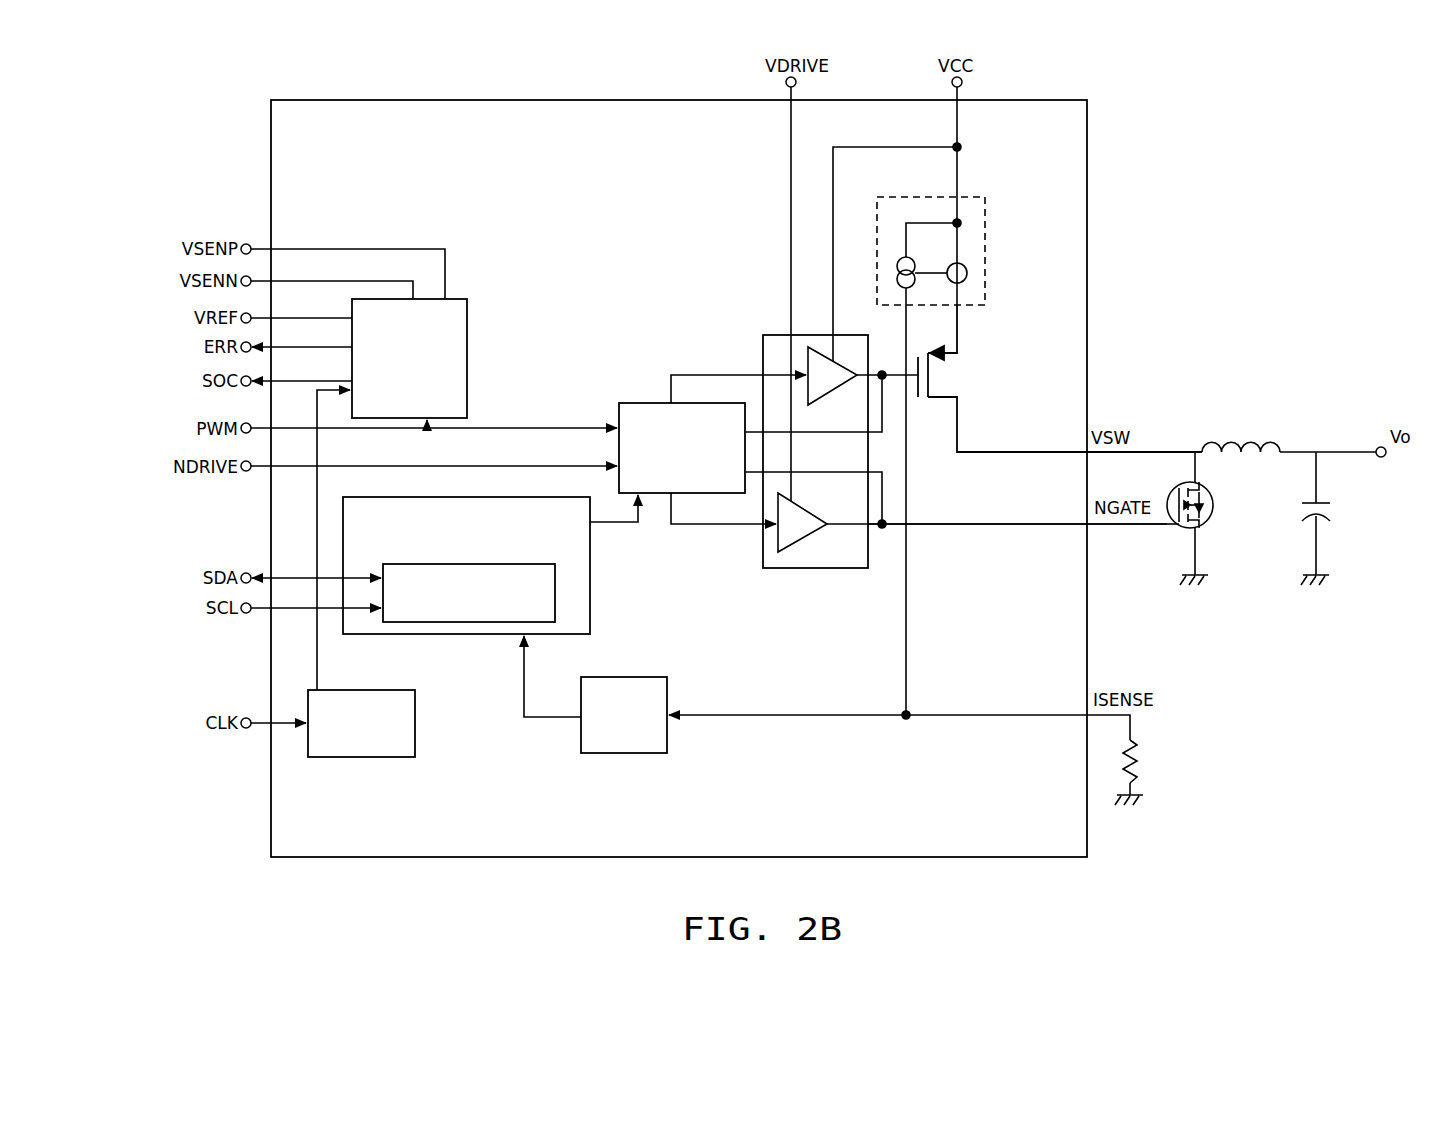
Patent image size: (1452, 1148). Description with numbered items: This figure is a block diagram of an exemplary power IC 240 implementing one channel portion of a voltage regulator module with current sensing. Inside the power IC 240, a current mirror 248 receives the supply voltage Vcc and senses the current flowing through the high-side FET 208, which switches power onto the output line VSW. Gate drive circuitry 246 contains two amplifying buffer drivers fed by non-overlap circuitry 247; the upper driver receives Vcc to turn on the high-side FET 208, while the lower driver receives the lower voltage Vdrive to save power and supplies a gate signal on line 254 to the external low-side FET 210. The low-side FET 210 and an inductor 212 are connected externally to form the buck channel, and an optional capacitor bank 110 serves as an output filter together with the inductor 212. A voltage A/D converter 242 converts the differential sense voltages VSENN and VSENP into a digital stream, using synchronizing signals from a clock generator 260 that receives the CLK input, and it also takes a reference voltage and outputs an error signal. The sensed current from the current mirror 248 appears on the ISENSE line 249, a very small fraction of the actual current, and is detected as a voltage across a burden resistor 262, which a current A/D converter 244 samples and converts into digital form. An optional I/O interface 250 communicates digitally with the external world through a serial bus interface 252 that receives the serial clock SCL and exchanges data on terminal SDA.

The power IC 240 is at (1087, 106).
The voltage A/D converter 242 is at (467, 318).
The current A/D converter 244 is at (625, 677).
The gate drive circuitry 246 is at (840, 568).
The non-overlap circuitry 247 is at (640, 403).
The current mirror 248 is at (985, 235).
The ISENSE line 249 is at (906, 610).
The I/O interface 250 is at (590, 545).
The serial bus interface 252 is at (455, 624).
The gate signal line 254 is at (1033, 524).
The clock generator 260 is at (378, 757).
The high-side FET 208 is at (945, 378).
The low-side FET 210 is at (1212, 510).
The inductor 212 is at (1230, 440).
The capacitor bank 110 is at (1340, 508).
The burden resistor 262 is at (1146, 758).